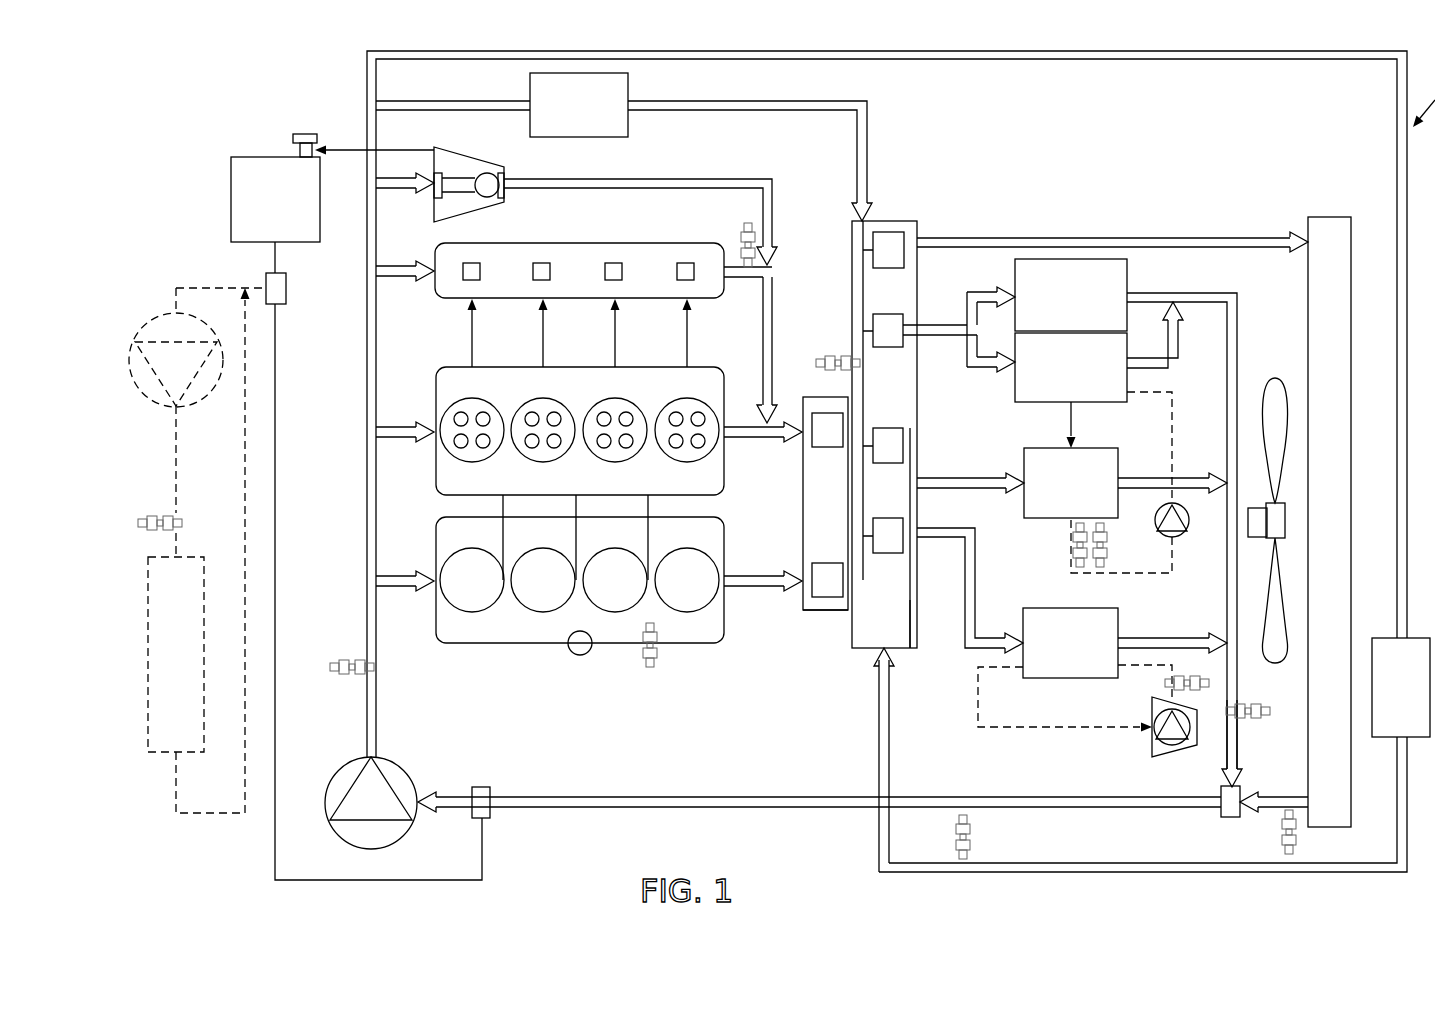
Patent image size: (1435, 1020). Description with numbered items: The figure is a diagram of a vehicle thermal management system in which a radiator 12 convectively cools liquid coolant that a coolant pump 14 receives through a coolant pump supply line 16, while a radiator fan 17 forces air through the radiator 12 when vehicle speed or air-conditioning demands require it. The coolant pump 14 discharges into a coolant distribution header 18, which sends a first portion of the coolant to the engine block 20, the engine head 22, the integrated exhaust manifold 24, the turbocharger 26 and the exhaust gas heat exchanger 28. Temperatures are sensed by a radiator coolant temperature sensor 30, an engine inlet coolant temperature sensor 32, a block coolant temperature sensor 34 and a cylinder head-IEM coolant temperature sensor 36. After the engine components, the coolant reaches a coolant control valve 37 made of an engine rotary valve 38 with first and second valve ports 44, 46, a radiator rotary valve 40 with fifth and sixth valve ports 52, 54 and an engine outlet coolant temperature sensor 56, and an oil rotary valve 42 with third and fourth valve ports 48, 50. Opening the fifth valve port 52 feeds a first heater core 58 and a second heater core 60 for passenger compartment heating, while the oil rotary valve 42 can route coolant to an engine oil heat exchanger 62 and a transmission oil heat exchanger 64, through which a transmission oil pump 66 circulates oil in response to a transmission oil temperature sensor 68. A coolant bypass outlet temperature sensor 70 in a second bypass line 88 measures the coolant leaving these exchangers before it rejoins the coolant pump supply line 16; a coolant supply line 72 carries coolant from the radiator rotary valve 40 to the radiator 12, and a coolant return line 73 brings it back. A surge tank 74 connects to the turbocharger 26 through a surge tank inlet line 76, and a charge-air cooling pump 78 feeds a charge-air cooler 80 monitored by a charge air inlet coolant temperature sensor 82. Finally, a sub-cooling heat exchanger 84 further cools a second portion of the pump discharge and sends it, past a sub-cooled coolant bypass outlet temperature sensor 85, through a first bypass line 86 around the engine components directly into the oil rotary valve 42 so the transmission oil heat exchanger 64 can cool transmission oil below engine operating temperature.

The radiator 12 is at (1330, 217).
The coolant pump 14 is at (346, 768).
The coolant pump supply line 16 is at (578, 808).
The radiator fan 17 is at (1275, 378).
The coolant distribution header 18 is at (370, 428).
The engine block 20 is at (438, 645).
The engine head 22 is at (440, 495).
The integrated exhaust manifold 24 is at (440, 300).
The turbocharger 26 is at (465, 157).
The exhaust gas heat exchanger 28 is at (628, 130).
The radiator coolant temperature sensor 30 is at (1283, 845).
The engine inlet coolant temperature sensor 32 is at (352, 655).
The block coolant temperature sensor 34 is at (658, 665).
The cylinder head-IEM coolant temperature sensor 36 is at (740, 236).
The coolant control valve 37 is at (803, 513).
The engine rotary valve 38 is at (826, 610).
The radiator rotary valve 40 is at (852, 240).
The oil rotary valve 42 is at (917, 618).
The first valve port 44 is at (808, 597).
The second valve port 46 is at (828, 447).
The third valve port 48 is at (892, 553).
The fourth valve port 50 is at (893, 463).
The fifth valve port 52 is at (893, 347).
The sixth valve port 54 is at (897, 232).
The engine outlet coolant temperature sensor 56 is at (838, 355).
The first heater core 58 is at (1015, 272).
The second heater core 60 is at (1015, 392).
The engine oil heat exchanger 62 is at (1024, 465).
The transmission oil heat exchanger 64 is at (1118, 615).
The transmission oil pump 66 is at (1150, 748).
The transmission oil temperature sensor 68 is at (1205, 684).
The coolant bypass outlet temperature sensor 70 is at (1250, 722).
The coolant supply line 72 is at (1090, 238).
The coolant return line 73 is at (1296, 797).
The surge tank 74 is at (231, 203).
The surge tank inlet line 76 is at (405, 150).
The charge-air cooling pump 78 is at (155, 325).
The charge-air cooler 80 is at (148, 655).
The charge air inlet coolant temperature sensor 82 is at (160, 512).
The sub-cooling heat exchanger 84 is at (1385, 638).
The sub-cooled coolant bypass outlet temperature sensor 85 is at (972, 823).
The first bypass line 86 is at (1110, 872).
The second bypass line 88 is at (1225, 752).